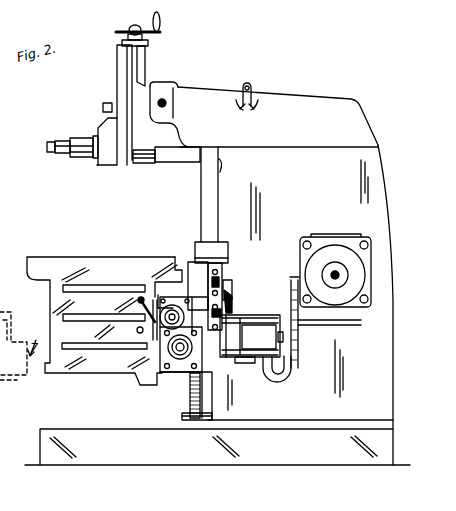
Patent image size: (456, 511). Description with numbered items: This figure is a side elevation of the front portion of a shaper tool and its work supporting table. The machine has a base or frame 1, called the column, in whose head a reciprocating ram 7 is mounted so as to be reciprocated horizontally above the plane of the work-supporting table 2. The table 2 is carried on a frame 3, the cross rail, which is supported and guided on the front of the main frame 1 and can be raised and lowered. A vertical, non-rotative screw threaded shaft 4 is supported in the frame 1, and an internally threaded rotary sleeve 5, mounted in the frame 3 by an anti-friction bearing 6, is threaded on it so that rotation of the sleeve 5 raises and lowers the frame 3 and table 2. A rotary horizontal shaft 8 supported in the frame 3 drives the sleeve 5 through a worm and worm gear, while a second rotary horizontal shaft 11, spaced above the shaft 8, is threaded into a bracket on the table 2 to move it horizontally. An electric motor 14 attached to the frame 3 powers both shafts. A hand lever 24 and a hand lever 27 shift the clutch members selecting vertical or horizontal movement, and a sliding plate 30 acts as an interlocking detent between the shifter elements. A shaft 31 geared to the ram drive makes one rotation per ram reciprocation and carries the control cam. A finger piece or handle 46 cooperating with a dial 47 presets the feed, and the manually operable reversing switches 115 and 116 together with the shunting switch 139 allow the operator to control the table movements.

The base or frame 1 is at (373, 192).
The work-supporting table 2 is at (104, 268).
The frame 3 is at (222, 254).
The screw threaded shaft 4 is at (188, 410).
The internally threaded rotary sleeve 5 is at (206, 380).
The anti-friction bearing 6 is at (175, 374).
The reciprocating ram 7 is at (50, 159).
The rotary horizontal shaft 8 is at (181, 342).
The rotary horizontal shaft 11 is at (205, 300).
The electric motor 14 is at (262, 315).
The hand lever 24 is at (133, 346).
The hand lever 27 is at (140, 298).
The sliding plate 30 is at (152, 326).
The shaft 31 is at (336, 270).
The finger piece or handle 46 is at (236, 308).
The dial 47 is at (235, 293).
The manually operable reversing switch 115 is at (225, 276).
The manually operable reversing switch 116 is at (236, 325).
The manually operated shunting switch 139 is at (208, 262).